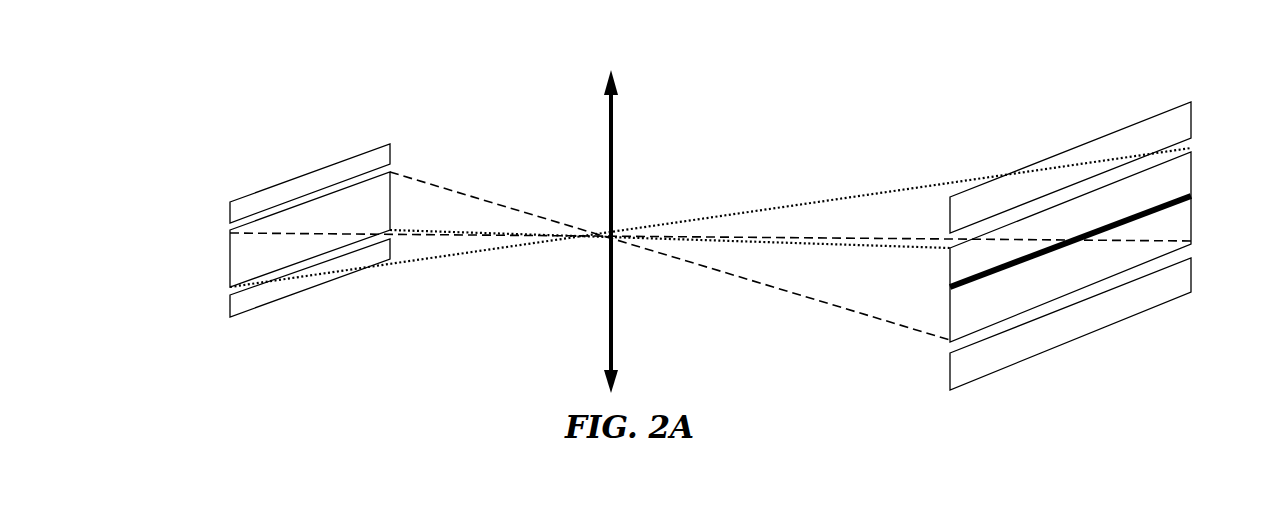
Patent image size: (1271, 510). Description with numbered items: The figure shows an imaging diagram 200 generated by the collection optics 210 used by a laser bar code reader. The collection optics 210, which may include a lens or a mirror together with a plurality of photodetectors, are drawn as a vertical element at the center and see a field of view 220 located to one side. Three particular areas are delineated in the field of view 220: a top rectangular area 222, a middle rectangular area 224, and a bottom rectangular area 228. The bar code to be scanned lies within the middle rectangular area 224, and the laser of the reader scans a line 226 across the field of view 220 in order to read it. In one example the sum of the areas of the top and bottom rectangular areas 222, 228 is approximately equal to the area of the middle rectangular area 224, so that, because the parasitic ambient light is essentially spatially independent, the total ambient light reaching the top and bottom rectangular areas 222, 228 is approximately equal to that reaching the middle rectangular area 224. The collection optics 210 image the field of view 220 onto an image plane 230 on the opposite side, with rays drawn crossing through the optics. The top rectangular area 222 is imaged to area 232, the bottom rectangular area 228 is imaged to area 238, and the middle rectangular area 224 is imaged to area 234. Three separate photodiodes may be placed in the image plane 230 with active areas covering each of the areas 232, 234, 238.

The imaging diagram 200 is at (266, 50).
The collection optics 210 is at (612, 112).
The field of view 220 is at (1191, 53).
The top rectangular area 222 is at (1136, 125).
The middle rectangular area 224 is at (1192, 173).
The line 226 is at (1191, 200).
The bottom rectangular area 228 is at (1143, 312).
The image plane 230 is at (393, 85).
The area 232 is at (280, 302).
The area 234 is at (229, 277).
The area 238 is at (252, 196).